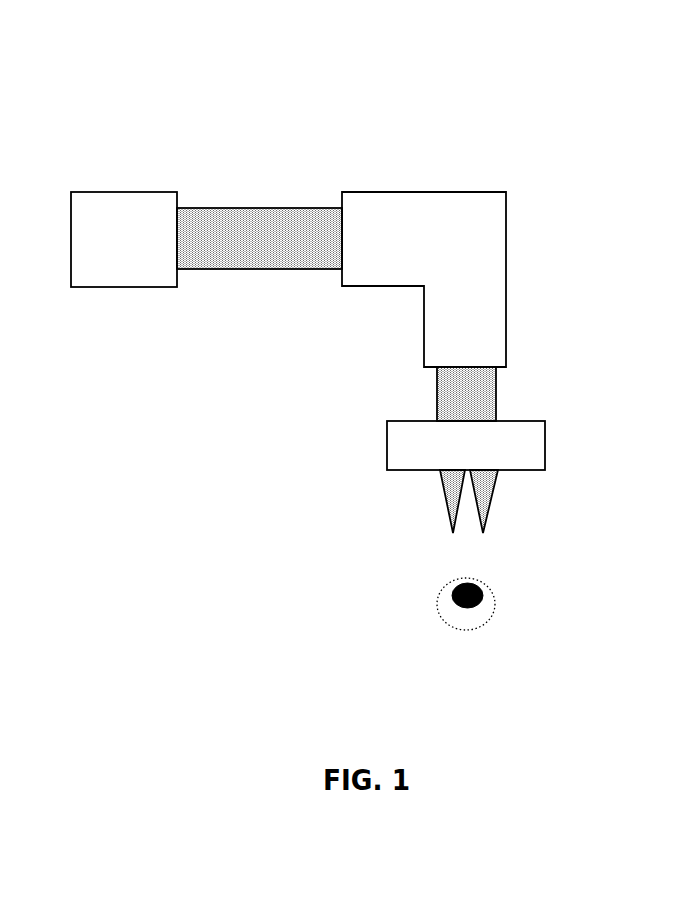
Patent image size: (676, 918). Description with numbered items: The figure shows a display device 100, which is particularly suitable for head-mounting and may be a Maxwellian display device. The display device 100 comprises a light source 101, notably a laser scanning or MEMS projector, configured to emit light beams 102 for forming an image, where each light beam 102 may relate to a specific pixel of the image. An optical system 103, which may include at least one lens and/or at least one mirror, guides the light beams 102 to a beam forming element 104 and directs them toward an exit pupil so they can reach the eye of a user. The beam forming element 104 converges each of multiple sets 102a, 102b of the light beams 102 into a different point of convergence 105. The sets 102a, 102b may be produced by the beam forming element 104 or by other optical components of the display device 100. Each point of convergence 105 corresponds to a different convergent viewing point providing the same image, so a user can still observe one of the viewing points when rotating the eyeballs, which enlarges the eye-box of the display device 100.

The display device 100 is at (545, 139).
The light source 101 is at (112, 192).
The light beams 102 is at (272, 208).
The set of the light beams 102a is at (442, 494).
The set of the light beams 102b is at (492, 496).
The optical system 103 is at (445, 192).
The beam forming element 104 is at (531, 421).
The point of convergence 105 is at (449, 536).